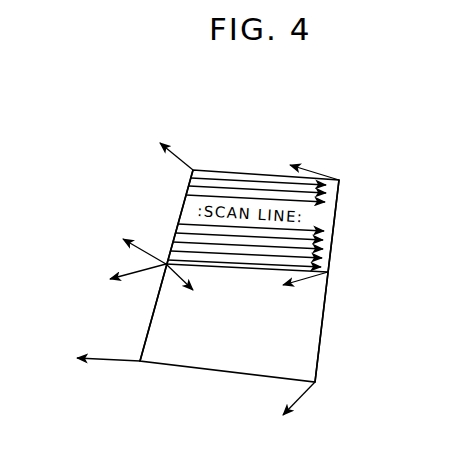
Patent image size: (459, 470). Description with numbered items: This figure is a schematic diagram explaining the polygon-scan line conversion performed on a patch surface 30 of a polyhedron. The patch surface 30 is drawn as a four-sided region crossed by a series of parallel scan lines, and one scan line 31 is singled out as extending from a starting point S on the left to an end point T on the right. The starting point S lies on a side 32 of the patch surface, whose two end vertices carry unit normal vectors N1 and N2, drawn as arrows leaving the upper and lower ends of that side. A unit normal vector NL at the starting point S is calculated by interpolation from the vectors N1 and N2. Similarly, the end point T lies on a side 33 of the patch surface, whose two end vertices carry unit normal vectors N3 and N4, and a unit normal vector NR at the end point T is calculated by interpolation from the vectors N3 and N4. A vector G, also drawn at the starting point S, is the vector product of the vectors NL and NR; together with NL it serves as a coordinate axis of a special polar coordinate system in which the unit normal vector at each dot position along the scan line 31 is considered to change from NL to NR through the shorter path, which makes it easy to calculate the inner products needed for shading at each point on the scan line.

The patch surface 30 is at (220, 367).
The scan line 31 is at (236, 270).
The side 32 is at (148, 330).
The side 33 is at (322, 329).
The starting point S is at (166, 264).
The end point T is at (328, 272).
The vector product G is at (221, 288).
The unit normal vector N1 is at (165, 114).
The unit normal vector N2 is at (63, 341).
The unit normal vector N3 is at (283, 422).
The unit normal vector N4 is at (299, 126).
The unit normal vector NL is at (107, 206).
The unit normal vector NR is at (100, 272).